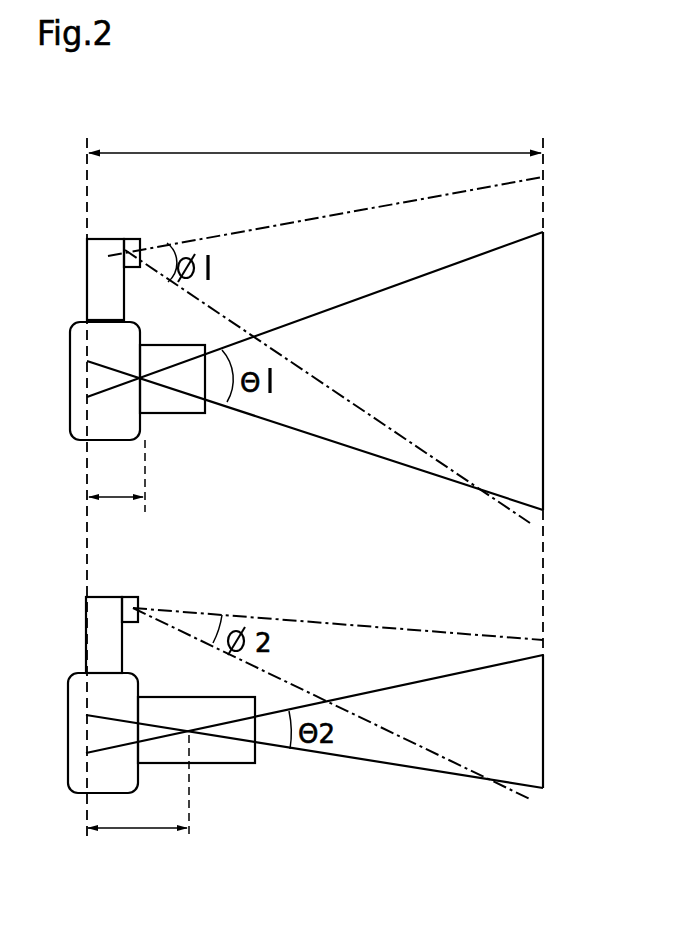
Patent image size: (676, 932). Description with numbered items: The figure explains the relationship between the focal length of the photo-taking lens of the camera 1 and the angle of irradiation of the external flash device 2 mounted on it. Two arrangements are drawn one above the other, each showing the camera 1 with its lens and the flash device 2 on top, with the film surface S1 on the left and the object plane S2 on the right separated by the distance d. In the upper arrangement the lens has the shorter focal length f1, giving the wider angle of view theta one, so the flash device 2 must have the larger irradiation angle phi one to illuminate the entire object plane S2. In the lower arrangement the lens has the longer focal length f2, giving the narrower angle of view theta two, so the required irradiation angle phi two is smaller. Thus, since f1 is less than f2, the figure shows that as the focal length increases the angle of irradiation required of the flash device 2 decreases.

The camera 1 is at (31, 353).
The external flash device 2 is at (87, 283).
The film surface S1 is at (97, 105).
The object plane S2 is at (549, 443).
The distance between film surface and object plane d is at (315, 141).
The focal length f1 is at (118, 469).
The focal length f2 is at (138, 786).